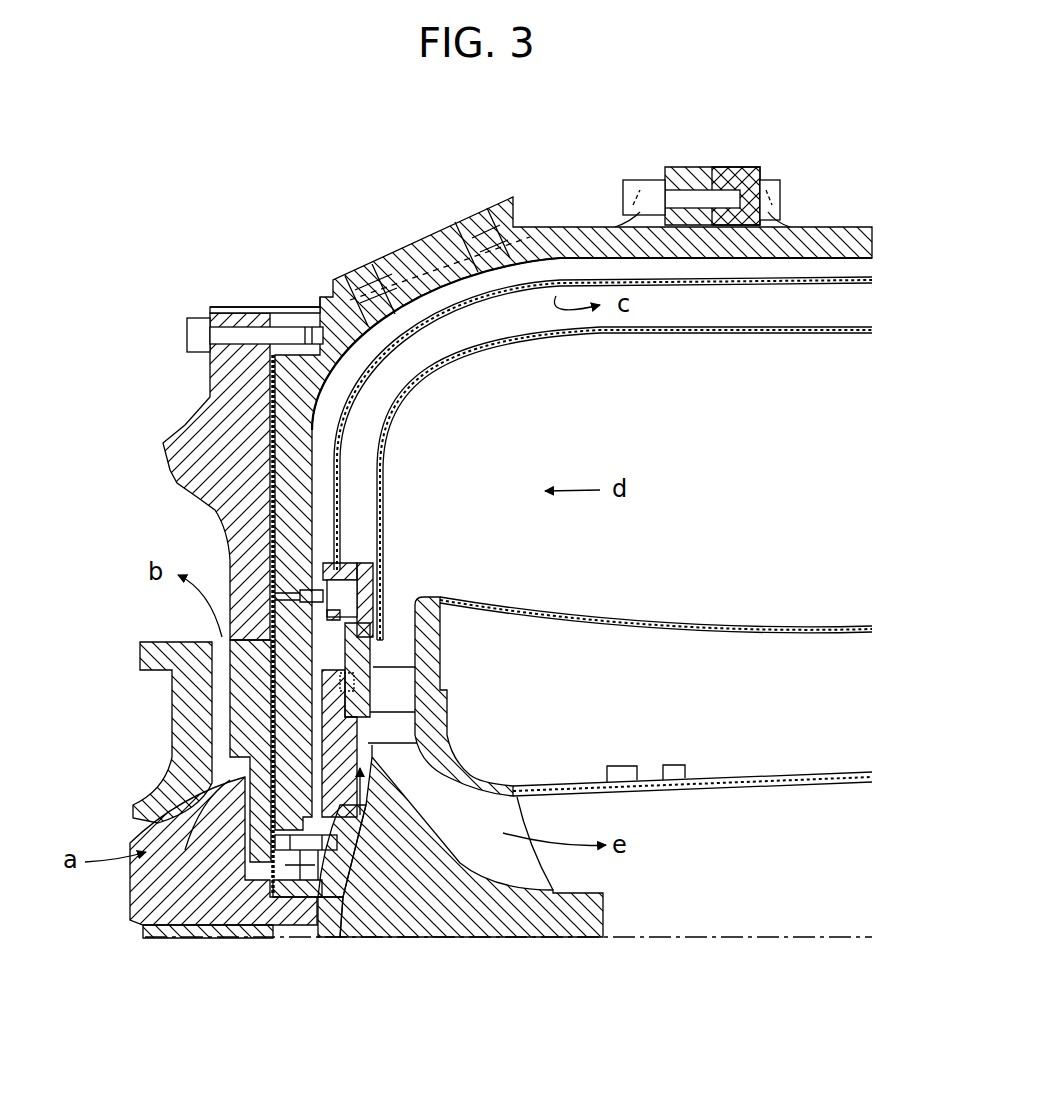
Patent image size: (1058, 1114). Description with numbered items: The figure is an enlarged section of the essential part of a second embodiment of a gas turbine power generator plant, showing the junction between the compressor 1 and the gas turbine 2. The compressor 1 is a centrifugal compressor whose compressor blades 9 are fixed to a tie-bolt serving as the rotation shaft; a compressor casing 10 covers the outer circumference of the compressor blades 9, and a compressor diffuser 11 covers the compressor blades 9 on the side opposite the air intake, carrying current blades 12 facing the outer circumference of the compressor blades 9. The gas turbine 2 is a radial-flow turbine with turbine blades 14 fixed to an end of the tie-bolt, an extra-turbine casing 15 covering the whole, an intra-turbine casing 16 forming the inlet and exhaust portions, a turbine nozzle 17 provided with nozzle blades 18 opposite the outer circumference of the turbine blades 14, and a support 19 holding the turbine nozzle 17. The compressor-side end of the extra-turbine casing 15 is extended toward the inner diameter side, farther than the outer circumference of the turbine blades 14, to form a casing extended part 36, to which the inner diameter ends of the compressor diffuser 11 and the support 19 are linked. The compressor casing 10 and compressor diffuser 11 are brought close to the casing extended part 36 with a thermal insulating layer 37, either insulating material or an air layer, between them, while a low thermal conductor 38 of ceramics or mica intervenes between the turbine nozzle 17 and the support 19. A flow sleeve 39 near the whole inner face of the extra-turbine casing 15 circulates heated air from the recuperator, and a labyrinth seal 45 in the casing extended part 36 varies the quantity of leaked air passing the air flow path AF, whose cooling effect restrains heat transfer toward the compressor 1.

The compressor 1 is at (207, 395).
The gas turbine 2 is at (537, 225).
The compressor blades 9 is at (168, 853).
The compressor casing 10 is at (187, 443).
The compressor diffuser 11 is at (247, 732).
The current blades 12 is at (218, 708).
The turbine blades 14 is at (466, 853).
The extra-turbine casing 15 is at (593, 223).
The intra-turbine casing 16 is at (732, 623).
The turbine nozzle 17 is at (440, 712).
The nozzle blades 18 is at (393, 683).
The support 19 is at (375, 815).
The casing extended part 36 is at (287, 523).
The thermal insulating layer 37 is at (237, 503).
The low thermal conductor 38 is at (343, 667).
The flow sleeve 39 is at (750, 283).
The labyrinth seal 45 is at (292, 895).
The air flow path AF is at (332, 882).